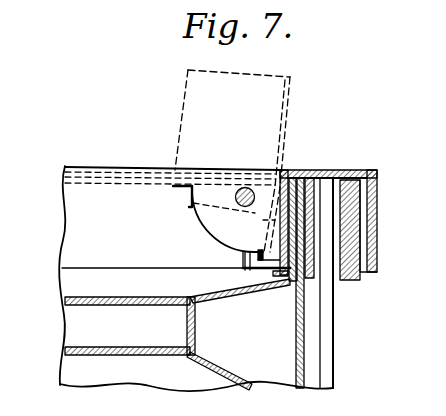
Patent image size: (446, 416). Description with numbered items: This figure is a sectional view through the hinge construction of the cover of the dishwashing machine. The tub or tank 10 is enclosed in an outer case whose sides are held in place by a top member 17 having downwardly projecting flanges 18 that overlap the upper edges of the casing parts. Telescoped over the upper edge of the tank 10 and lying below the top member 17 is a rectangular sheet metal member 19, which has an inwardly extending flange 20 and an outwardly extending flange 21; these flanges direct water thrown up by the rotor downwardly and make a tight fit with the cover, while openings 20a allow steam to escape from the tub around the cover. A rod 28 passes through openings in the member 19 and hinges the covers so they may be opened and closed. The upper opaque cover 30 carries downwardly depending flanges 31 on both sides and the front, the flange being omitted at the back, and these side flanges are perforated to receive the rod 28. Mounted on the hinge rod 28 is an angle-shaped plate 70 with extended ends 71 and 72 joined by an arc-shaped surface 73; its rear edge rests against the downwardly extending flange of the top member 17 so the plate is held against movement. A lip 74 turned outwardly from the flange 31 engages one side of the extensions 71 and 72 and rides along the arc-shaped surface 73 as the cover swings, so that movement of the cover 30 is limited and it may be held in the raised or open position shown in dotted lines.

The tub or tank 10 is at (305, 358).
The top member 17 is at (362, 170).
The downwardly projecting flanges 18 is at (376, 241).
The sheet metal member 19 is at (306, 176).
The inwardly extending flange 20 is at (220, 306).
The openings 20a is at (270, 292).
The outwardly extending flange 21 is at (213, 381).
The rod 28 is at (243, 187).
The second opaque cover 30 is at (95, 166).
The downwardly depending flanges 31 is at (73, 221).
The angle-shaped plate 70 is at (268, 234).
The extended end 71 is at (243, 276).
The extended end 72 is at (183, 188).
The arc-shaped surface 73 is at (200, 224).
The lip 74 is at (190, 192).